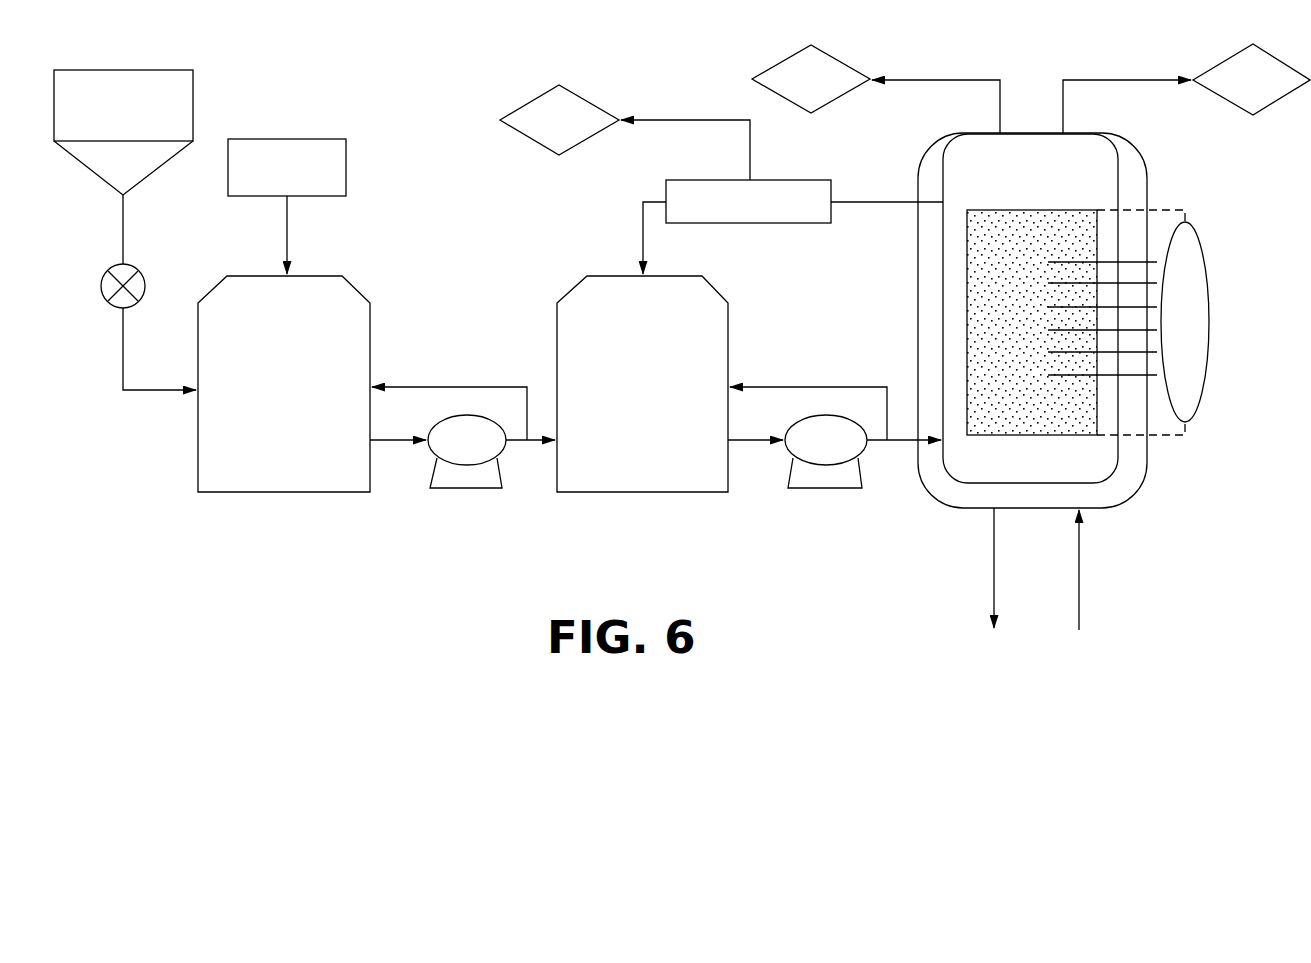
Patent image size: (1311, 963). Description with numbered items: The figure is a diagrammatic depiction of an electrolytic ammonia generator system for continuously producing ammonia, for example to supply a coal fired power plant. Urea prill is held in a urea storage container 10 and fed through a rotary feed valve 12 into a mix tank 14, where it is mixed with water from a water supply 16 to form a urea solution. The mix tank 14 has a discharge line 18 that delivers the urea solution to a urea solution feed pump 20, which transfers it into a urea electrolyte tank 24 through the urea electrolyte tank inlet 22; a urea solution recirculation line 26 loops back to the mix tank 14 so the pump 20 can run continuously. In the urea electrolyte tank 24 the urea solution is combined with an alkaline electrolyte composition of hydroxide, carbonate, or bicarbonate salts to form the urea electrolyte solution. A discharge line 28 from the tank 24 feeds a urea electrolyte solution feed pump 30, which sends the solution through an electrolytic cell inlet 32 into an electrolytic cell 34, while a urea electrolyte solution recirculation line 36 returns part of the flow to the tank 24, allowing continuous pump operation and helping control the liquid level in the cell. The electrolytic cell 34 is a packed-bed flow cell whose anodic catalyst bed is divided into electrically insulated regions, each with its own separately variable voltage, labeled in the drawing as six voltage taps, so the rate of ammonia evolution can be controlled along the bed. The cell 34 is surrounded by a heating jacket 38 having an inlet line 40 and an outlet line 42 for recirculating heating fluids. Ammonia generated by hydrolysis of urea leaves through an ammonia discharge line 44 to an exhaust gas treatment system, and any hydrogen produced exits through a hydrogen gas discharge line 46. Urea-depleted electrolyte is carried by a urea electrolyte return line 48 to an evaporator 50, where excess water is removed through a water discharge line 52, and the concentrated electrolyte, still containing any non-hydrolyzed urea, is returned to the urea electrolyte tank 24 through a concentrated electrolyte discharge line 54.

The urea storage container 10 is at (194, 82).
The rotary feed valve 12 is at (101, 284).
The mix tank 14 is at (198, 438).
The water supply 16 is at (346, 165).
The discharge line 18 is at (395, 443).
The urea solution feed pump 20 is at (470, 488).
The urea electrolyte tank inlet 22 is at (520, 443).
The urea electrolyte tank 24 is at (642, 492).
The urea solution recirculation line 26 is at (472, 385).
The discharge line 28 is at (753, 445).
The urea electrolyte solution feed pump 30 is at (830, 488).
The electrolytic cell inlet 32 is at (882, 443).
The electrolytic cell 34 is at (1120, 445).
The urea electrolyte solution recirculation line 36 is at (833, 385).
The heating jacket 38 is at (1147, 467).
The inlet line 40 is at (1079, 567).
The outlet line 42 is at (994, 566).
The ammonia discharge line 44 is at (1122, 80).
The hydrogen gas discharge line 46 is at (933, 80).
The urea electrolyte return line 48 is at (888, 200).
The evaporator 50 is at (778, 180).
The water discharge line 52 is at (683, 120).
The concentrated electrolyte discharge line 54 is at (643, 236).